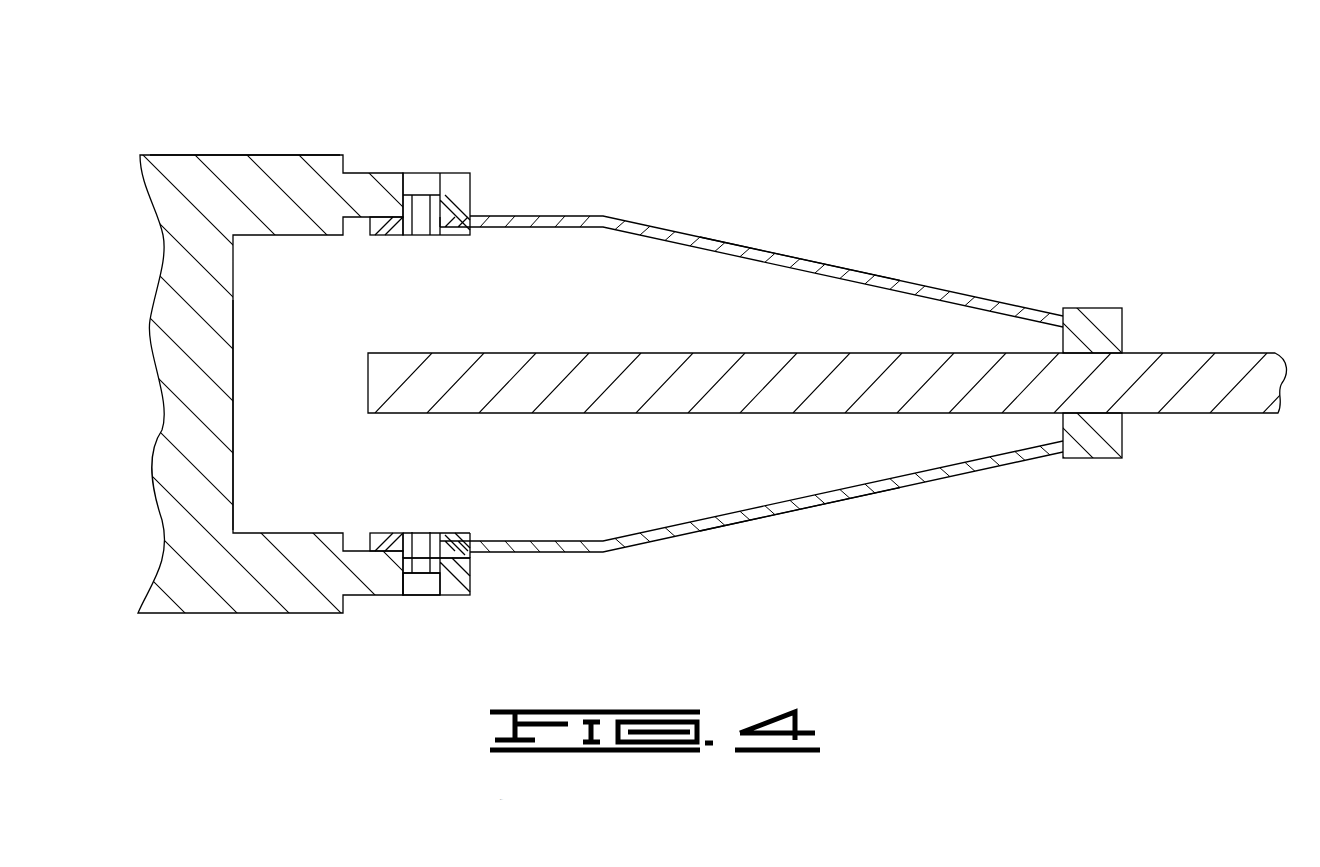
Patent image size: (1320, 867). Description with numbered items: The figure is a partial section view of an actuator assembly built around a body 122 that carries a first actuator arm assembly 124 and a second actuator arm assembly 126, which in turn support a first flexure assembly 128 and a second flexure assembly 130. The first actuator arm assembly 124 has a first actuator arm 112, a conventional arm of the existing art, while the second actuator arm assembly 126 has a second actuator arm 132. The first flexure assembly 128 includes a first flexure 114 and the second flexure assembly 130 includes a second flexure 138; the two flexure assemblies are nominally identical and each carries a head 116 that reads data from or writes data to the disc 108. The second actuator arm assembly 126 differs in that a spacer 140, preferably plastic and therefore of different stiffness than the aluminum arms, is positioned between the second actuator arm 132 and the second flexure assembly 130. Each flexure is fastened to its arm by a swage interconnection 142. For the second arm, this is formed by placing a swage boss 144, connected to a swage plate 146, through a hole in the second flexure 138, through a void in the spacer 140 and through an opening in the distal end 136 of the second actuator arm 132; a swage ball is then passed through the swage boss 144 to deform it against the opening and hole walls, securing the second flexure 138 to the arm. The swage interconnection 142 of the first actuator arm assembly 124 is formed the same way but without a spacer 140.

The disc 108 is at (762, 353).
The first actuator arm 112 is at (295, 155).
The first flexure 114 is at (600, 216).
The head 116 is at (1088, 308).
The body 122 is at (198, 155).
The first actuator arm assembly 124 is at (440, 344).
The second actuator arm assembly 126 is at (458, 604).
The first flexure assembly 128 is at (815, 206).
The second flexure assembly 130 is at (797, 533).
The second actuator arm 132 is at (245, 552).
The distal end 136 is at (478, 168).
The second flexure 138 is at (567, 540).
The spacer 140 is at (473, 570).
The swage interconnection 142 is at (407, 250).
The swage boss 144 is at (412, 575).
The swage plate 146 is at (443, 237).